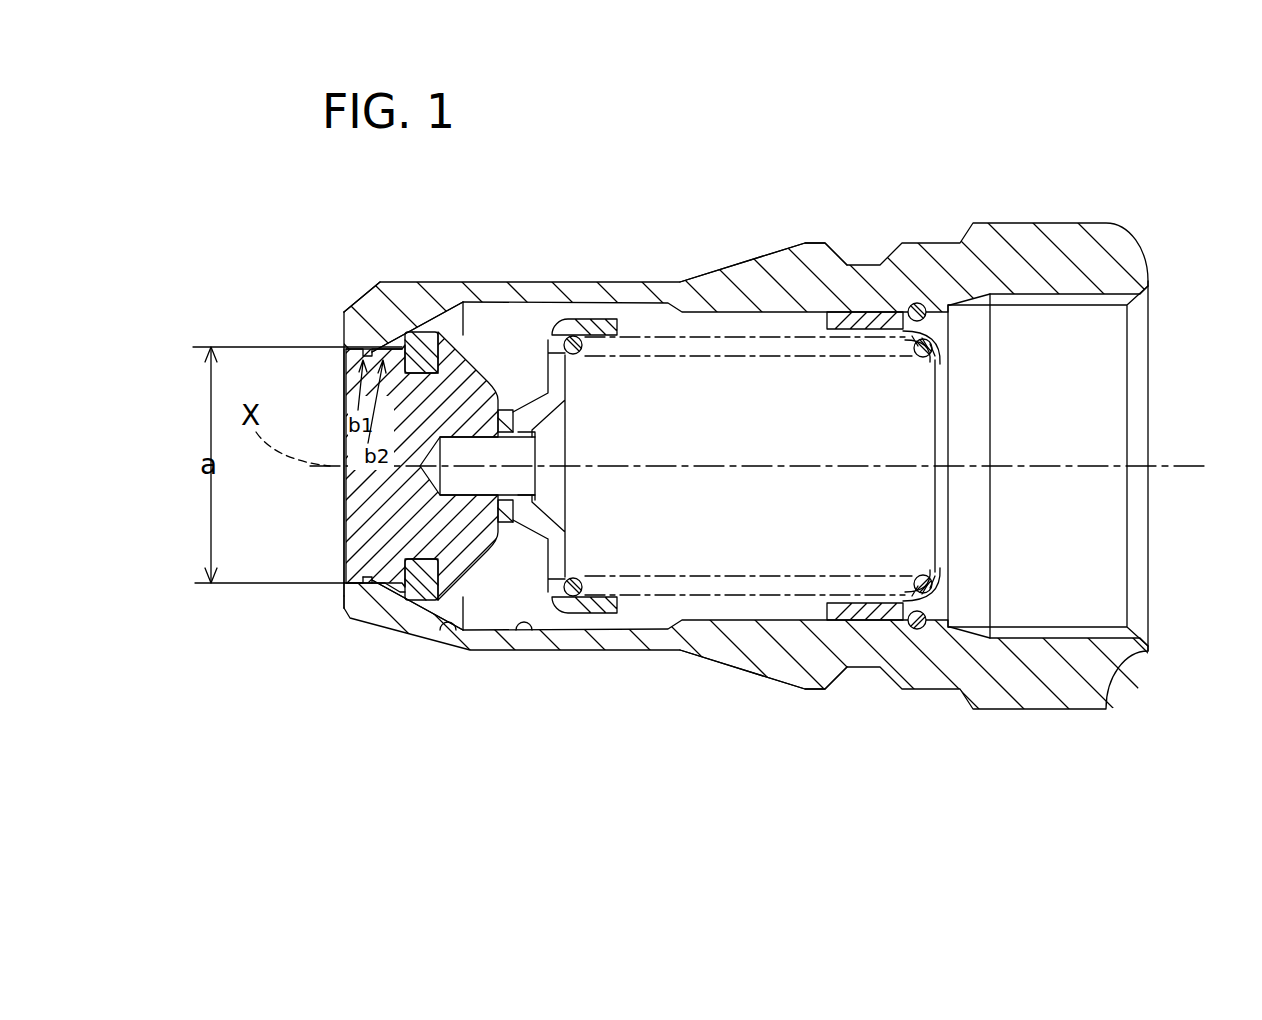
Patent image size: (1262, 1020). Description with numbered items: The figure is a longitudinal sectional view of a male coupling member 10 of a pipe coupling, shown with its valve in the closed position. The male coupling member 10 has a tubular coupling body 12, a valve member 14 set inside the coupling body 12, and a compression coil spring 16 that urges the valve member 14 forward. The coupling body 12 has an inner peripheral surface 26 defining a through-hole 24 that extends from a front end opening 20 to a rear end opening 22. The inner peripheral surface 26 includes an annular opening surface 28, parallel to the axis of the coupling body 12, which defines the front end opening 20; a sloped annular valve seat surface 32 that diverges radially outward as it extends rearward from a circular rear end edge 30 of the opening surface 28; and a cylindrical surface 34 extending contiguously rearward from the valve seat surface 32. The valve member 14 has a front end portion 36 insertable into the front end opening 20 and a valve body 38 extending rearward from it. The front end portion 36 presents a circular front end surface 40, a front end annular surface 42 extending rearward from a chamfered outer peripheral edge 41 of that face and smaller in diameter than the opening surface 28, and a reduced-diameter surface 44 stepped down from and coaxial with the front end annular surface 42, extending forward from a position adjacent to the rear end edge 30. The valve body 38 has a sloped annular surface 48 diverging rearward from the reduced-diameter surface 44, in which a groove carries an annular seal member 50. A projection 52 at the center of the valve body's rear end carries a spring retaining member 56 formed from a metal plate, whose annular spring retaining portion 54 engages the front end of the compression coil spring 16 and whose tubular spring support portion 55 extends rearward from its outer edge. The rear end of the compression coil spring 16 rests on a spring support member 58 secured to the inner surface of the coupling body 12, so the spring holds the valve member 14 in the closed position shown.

The male coupling member 10 is at (771, 176).
The coupling body 12 is at (534, 282).
The valve member 14 is at (252, 668).
The compression coil spring 16 is at (772, 330).
The front end opening 20 is at (337, 404).
The rear end opening 22 is at (1158, 400).
The through-hole 24 is at (780, 434).
The inner peripheral surface 26 is at (515, 740).
The annular opening surface 28 is at (376, 590).
The circular rear end edge 30 is at (385, 587).
The annular valve seat surface 32 is at (465, 598).
The cylindrical surface 34 is at (517, 617).
The front end portion 36 is at (345, 587).
The valve body 38 is at (367, 580).
The circular front end surface 40 is at (343, 584).
The chamfered outer peripheral edge 41 is at (343, 588).
The front end annular surface 42 is at (345, 312).
The reduced-diameter surface 44 is at (362, 352).
The sloped annular surface 48 is at (375, 349).
The annular seal member 50 is at (388, 342).
The projection 52 is at (520, 505).
The annular spring retaining portion 54 is at (540, 336).
The tubular spring support portion 55 is at (605, 612).
The spring retaining member 56 is at (578, 386).
The spring support member 58 is at (862, 318).